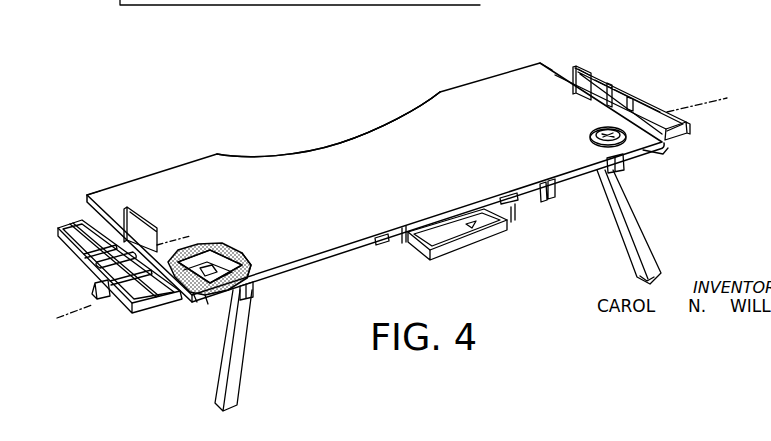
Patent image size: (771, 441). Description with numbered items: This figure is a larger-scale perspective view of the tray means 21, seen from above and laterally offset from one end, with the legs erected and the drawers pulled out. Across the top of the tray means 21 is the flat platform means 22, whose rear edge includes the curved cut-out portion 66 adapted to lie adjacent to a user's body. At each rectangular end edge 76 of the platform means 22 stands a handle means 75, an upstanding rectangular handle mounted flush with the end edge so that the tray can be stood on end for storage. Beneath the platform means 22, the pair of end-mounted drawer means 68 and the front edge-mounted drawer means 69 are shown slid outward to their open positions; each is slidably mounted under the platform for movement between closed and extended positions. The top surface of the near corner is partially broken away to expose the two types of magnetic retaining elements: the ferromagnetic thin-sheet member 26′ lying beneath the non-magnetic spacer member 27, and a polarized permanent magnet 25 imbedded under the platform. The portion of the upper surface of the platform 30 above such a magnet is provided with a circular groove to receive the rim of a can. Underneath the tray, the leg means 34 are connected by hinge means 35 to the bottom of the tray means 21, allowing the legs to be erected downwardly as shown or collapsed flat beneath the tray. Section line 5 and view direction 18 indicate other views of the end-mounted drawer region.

The tray means 21 is at (498, 57).
The platform means 22 is at (322, 168).
The curved cut-out portion 66 is at (343, 147).
The end edges 76 is at (87, 193).
The handle means 75 is at (132, 210).
The end-mounted drawer means 68 is at (138, 322).
The section line 5- 5 is at (55, 318).
The view direction 18 is at (72, 287).
The portion of the upper surface of the platform 30 is at (590, 125).
The ferromagnetic thin-sheet member 26′ is at (203, 248).
The non-magnetic spacer member 27 is at (240, 257).
The polarized permanent magnet 25 is at (197, 293).
The leg means 34 is at (640, 213).
The hinge means 35 is at (627, 170).
The edge-mounted drawer means 69 is at (425, 258).